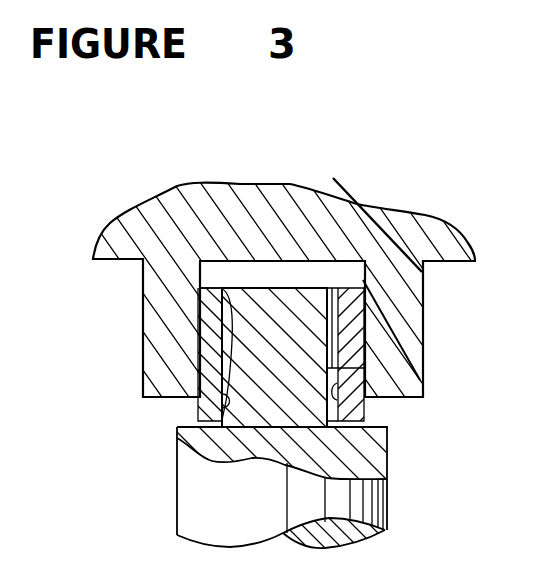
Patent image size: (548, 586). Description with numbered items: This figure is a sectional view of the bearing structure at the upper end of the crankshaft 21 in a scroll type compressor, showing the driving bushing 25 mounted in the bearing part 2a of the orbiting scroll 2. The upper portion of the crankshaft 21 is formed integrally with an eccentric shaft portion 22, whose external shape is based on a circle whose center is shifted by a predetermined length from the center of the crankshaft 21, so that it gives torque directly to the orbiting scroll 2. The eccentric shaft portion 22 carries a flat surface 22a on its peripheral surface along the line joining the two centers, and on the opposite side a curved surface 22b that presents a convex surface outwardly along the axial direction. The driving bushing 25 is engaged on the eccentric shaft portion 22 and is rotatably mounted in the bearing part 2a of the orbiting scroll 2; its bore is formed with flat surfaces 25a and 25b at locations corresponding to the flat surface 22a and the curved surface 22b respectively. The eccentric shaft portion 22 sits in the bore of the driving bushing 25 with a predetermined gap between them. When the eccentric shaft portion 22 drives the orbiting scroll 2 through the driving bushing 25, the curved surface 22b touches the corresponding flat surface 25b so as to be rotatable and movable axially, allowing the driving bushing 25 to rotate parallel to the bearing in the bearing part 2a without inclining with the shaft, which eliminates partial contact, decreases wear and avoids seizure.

The orbiting scroll 2 is at (433, 235).
The bearing part 2a is at (400, 333).
The crankshaft 21 is at (177, 484).
The eccentric shaft portion 22 is at (279, 329).
The flat surface 22a is at (370, 372).
The curved surface 22b is at (220, 291).
The driving bushing 25 is at (360, 315).
The flat surface 25a is at (332, 416).
The flat surface 25b is at (210, 416).